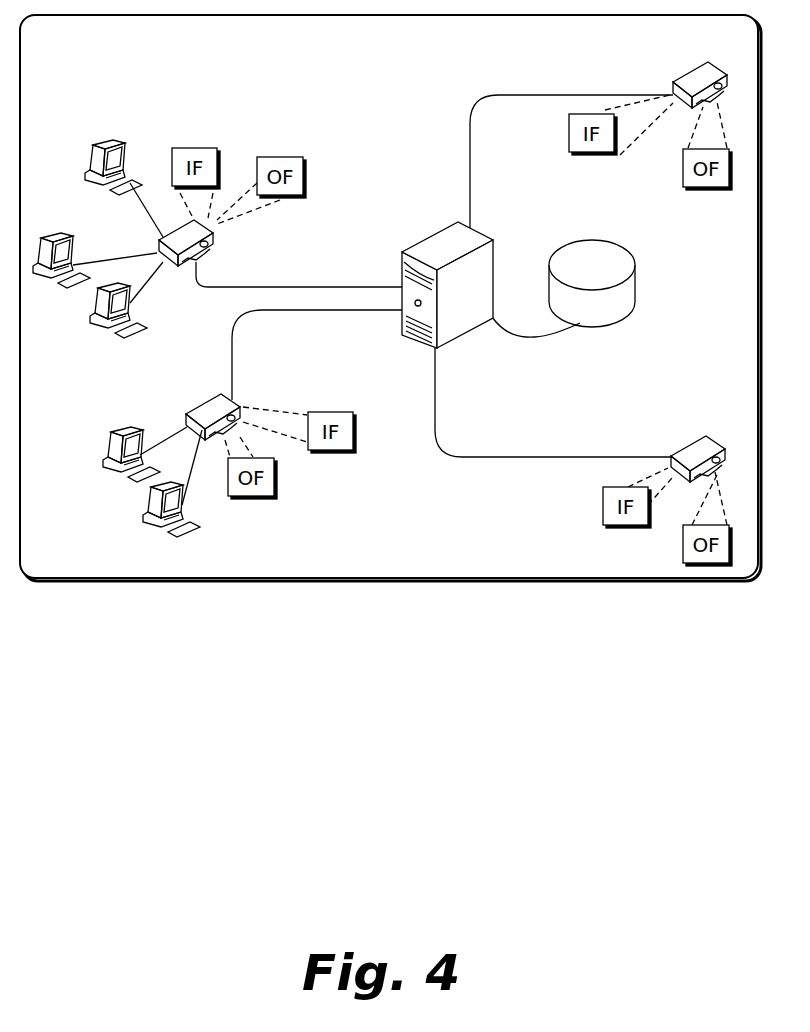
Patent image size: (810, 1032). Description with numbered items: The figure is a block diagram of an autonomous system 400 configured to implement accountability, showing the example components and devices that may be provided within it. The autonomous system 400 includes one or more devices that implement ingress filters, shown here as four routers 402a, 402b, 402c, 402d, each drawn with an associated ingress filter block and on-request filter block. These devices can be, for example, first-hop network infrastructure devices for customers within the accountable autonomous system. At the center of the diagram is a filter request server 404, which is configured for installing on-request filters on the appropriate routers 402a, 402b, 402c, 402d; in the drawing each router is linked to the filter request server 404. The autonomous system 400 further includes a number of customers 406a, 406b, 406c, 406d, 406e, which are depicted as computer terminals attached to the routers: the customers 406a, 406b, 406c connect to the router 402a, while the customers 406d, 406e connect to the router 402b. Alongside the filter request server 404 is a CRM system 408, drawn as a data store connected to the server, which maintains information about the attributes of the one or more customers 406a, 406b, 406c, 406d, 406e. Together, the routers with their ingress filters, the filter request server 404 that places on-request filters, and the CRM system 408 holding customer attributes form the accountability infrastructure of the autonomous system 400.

The autonomous system 400 is at (390, 298).
The router 402a is at (210, 250).
The router 402b is at (198, 403).
The router 402c is at (700, 65).
The router 402d is at (700, 437).
The filter request server 404 is at (480, 230).
The customer 406a is at (120, 144).
The customer 406b is at (67, 236).
The customer 406c is at (138, 333).
The customer 406d is at (120, 432).
The customer 406e is at (192, 533).
The CRM system 408 is at (598, 240).